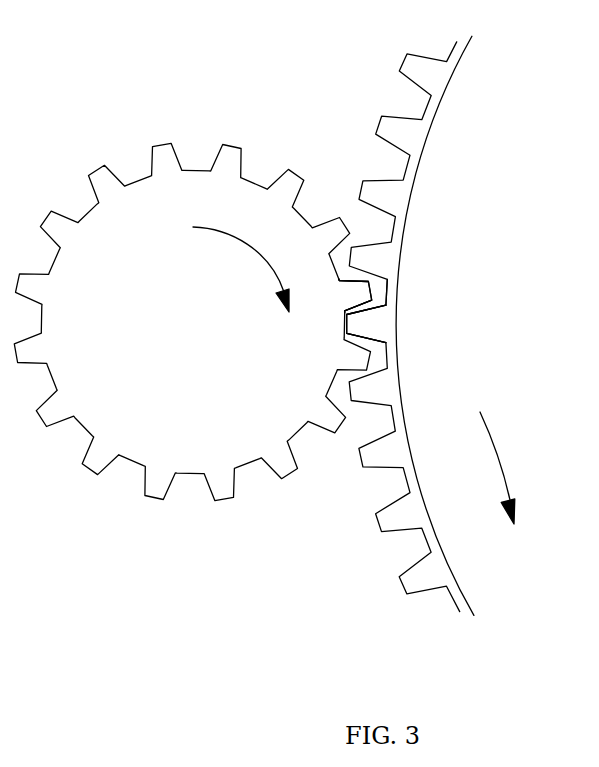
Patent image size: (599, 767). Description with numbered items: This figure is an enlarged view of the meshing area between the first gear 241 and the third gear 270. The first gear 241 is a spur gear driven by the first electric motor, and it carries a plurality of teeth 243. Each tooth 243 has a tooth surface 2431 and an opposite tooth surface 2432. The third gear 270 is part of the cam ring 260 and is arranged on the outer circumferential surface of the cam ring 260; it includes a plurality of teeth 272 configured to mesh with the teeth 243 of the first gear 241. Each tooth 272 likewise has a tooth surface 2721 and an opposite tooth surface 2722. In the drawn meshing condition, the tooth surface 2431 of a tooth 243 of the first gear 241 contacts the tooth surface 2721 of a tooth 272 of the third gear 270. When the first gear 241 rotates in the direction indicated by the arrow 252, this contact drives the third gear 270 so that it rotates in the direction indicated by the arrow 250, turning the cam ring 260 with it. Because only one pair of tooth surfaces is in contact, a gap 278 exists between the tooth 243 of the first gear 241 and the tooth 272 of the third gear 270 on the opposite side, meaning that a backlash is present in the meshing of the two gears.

The first gear 241 is at (147, 204).
The tooth 243 is at (367, 296).
The tooth surface 2431 is at (347, 312).
The tooth surface 2432 is at (346, 282).
The arrow 252 is at (248, 245).
The third gear 270 is at (408, 478).
The tooth 272 is at (368, 326).
The tooth surface 2721 is at (383, 297).
The tooth surface 2722 is at (381, 344).
The gap 278 is at (358, 276).
The cam ring 260 is at (456, 592).
The arrow 250 is at (498, 463).